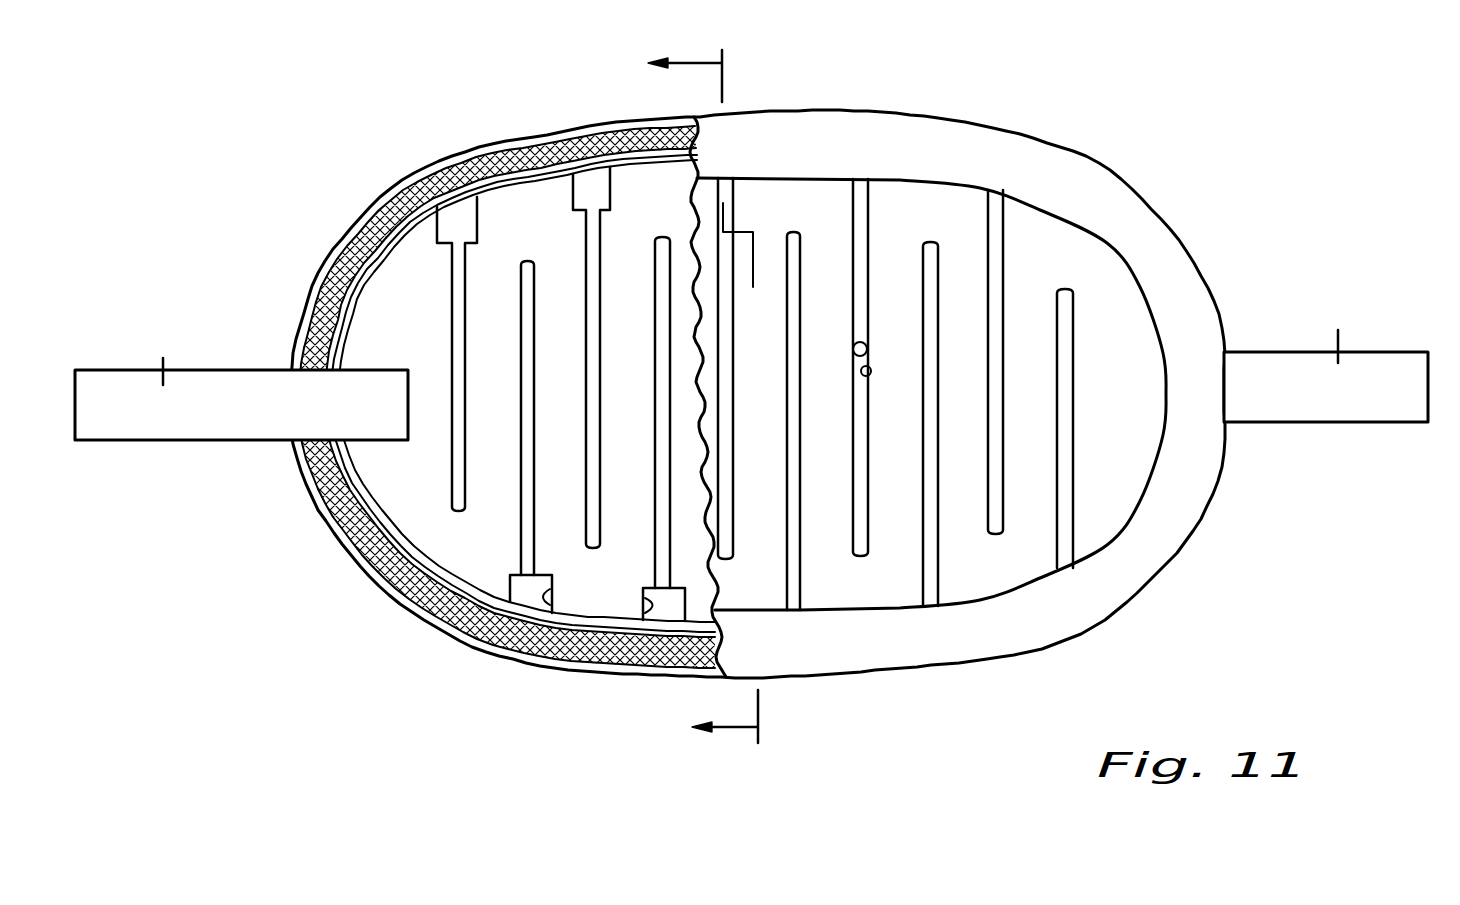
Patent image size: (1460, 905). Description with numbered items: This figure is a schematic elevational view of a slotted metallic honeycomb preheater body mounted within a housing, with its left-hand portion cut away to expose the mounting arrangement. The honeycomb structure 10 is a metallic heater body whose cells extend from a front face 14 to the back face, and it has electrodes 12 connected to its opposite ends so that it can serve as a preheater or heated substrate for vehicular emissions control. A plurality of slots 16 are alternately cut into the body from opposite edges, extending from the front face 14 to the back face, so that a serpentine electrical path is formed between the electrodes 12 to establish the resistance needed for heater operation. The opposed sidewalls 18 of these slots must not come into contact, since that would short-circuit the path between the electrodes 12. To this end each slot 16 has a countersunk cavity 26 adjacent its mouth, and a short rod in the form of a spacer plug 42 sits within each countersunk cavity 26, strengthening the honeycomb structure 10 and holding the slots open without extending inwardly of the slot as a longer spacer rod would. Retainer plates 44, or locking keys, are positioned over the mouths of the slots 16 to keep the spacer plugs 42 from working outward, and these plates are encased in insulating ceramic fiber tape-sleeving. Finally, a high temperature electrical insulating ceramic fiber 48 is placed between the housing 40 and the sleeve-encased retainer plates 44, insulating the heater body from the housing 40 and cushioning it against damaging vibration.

The honeycomb structure 10 is at (430, 326).
The electrodes 12 is at (751, 397).
The front face 14 is at (1128, 461).
The slots 16 is at (595, 489).
The opposed sidewalls 18 is at (853, 355).
The countersunk cavity 26 is at (645, 603).
The housing 40 is at (358, 588).
The spacer plug 42 is at (587, 197).
The retainer plates 44 is at (647, 160).
The ceramic fiber 48 is at (348, 238).